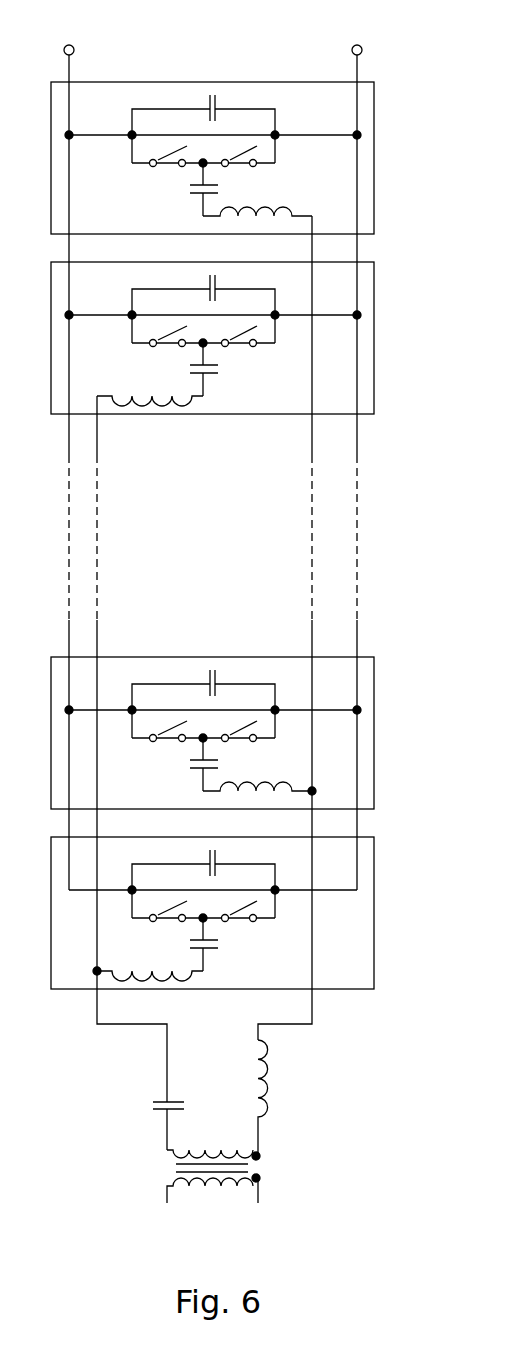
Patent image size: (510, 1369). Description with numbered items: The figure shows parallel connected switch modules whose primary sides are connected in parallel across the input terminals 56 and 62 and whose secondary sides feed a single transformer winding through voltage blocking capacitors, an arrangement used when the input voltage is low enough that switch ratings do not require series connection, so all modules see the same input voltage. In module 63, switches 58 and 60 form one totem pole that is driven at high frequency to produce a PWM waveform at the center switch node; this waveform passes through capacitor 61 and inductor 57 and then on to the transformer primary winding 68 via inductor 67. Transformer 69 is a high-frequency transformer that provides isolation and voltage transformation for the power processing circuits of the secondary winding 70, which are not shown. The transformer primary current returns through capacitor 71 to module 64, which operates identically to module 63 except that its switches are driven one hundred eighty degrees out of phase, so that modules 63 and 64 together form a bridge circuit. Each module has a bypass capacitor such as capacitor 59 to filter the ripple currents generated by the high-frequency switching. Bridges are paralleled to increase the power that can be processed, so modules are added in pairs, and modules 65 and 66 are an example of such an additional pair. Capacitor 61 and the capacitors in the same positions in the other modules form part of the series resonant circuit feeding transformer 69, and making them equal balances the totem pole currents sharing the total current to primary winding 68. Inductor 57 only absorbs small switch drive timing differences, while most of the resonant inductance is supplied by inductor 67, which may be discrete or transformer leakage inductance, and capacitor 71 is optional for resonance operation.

The terminal 56 is at (365, 62).
The inductor 57 is at (275, 200).
The switch 58 is at (239, 145).
The bypass capacitor 59 is at (203, 100).
The switch 60 is at (153, 147).
The capacitor 61 is at (178, 190).
The terminal 62 is at (63, 62).
The module 63 is at (227, 121).
The module 64 is at (384, 335).
The module 65 is at (384, 713).
The module 66 is at (384, 895).
The inductor 67 is at (272, 1068).
The transformer primary winding 68 is at (220, 1148).
The transformer 69 is at (265, 1175).
The secondary winding 70 is at (222, 1193).
The capacitor 71 is at (150, 1103).